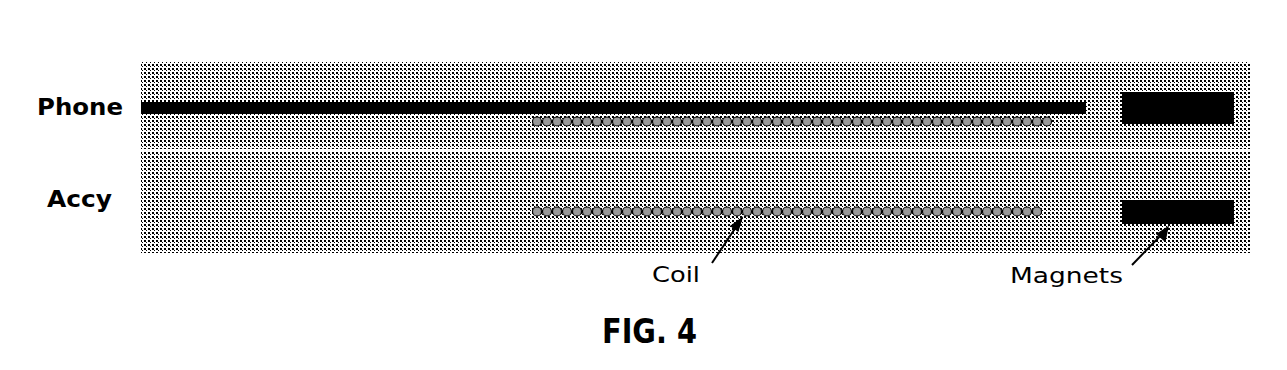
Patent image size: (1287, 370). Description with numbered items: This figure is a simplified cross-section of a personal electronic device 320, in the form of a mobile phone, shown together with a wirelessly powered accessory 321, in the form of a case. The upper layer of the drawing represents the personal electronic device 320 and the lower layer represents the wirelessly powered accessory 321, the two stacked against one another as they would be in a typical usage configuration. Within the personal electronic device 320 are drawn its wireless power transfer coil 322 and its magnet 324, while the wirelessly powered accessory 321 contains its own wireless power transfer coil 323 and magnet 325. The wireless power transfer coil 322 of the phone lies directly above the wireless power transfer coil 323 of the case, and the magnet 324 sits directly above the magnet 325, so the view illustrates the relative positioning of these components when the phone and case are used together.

The personal electronic device 320 is at (230, 62).
The wirelessly powered accessory 321 is at (306, 253).
The wireless power transfer coil 322 is at (682, 132).
The wireless power transfer coil 323 is at (797, 222).
The magnet 324 is at (1147, 92).
The magnet 325 is at (1177, 224).